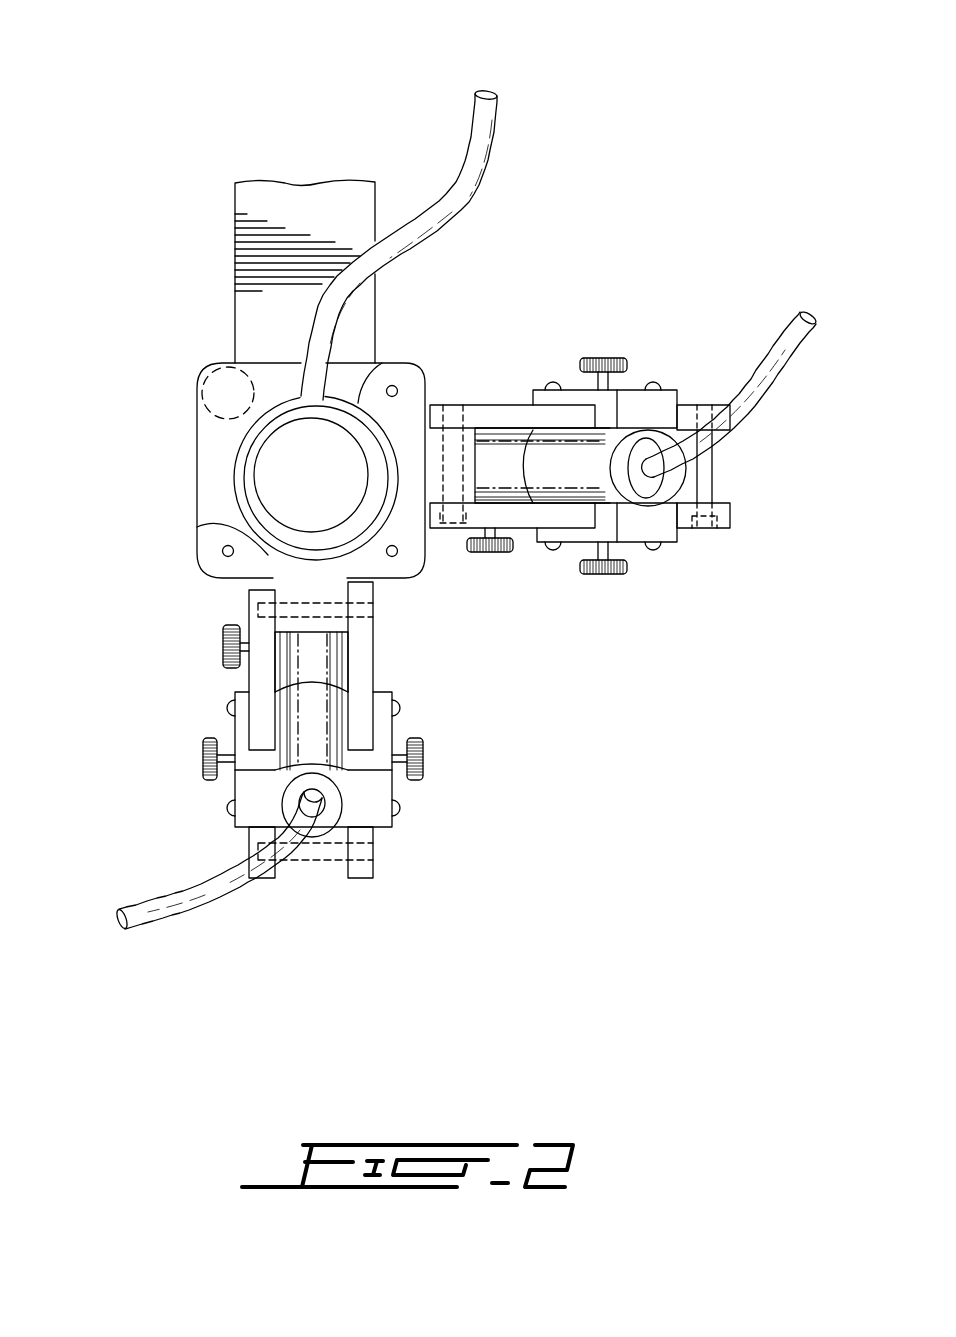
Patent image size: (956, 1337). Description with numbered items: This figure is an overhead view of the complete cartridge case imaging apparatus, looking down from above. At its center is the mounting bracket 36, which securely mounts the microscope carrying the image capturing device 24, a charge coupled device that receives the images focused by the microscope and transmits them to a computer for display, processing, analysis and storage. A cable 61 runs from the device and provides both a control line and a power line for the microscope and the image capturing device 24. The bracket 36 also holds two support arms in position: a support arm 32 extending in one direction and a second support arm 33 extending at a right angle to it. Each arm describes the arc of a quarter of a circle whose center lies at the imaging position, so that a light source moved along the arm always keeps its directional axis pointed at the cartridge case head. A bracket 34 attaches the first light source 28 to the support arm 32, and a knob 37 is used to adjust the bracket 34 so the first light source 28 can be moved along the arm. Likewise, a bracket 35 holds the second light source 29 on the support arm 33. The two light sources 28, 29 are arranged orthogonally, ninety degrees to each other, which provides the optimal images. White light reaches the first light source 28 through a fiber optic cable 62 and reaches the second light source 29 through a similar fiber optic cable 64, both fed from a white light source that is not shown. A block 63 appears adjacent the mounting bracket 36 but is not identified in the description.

The image capturing device 24 is at (283, 465).
The first light source 28 is at (296, 670).
The second light source 29 is at (542, 487).
The support arm 32 is at (377, 659).
The support arm 33 is at (488, 417).
The bracket 34 is at (393, 727).
The bracket 35 is at (690, 403).
The bracket 36 is at (402, 368).
The knob 37 is at (203, 758).
The cable 61 is at (485, 130).
The fiber optic cable 62 is at (157, 908).
The block 63 is at (283, 200).
The fiber optic cable 64 is at (770, 382).